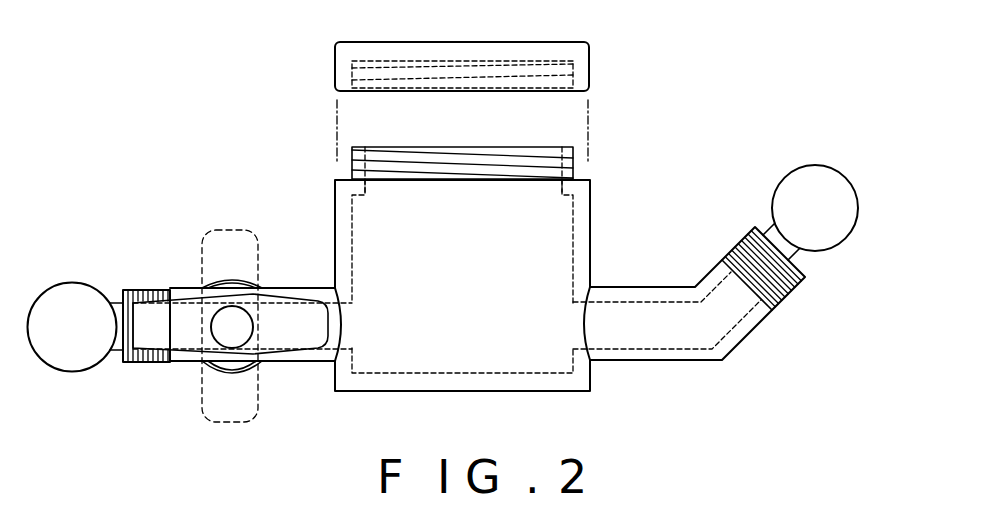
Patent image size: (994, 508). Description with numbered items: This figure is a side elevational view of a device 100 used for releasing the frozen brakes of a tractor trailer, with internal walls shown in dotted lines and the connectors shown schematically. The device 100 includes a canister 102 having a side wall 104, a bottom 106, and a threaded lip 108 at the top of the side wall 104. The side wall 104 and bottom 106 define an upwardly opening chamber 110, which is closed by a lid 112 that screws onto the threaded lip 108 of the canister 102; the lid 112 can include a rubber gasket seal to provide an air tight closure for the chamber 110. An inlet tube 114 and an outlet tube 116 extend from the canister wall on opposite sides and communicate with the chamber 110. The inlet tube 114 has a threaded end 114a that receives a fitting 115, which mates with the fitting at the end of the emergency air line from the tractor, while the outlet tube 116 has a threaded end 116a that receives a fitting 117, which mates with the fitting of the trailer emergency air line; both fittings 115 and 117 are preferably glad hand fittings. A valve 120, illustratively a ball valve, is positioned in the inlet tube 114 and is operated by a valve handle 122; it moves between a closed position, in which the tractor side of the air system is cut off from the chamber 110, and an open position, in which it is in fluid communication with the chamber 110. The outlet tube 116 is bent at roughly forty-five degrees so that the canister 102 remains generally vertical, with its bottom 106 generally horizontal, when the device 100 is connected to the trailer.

The device 100 is at (673, 163).
The canister 102 is at (605, 212).
The side wall 104 is at (591, 256).
The bottom 106 is at (564, 392).
The threaded lip 108 is at (574, 162).
The chamber 110 is at (472, 262).
The lid 112 is at (568, 33).
The inlet tube 114 is at (287, 363).
The threaded end of inlet tube 114a is at (146, 363).
The fitting 115 is at (74, 283).
The outlet tube 116 is at (672, 362).
The threaded end of outlet tube 116a is at (786, 292).
The fitting 117 is at (817, 165).
The valve 120 is at (208, 370).
The valve handle 122 is at (260, 248).